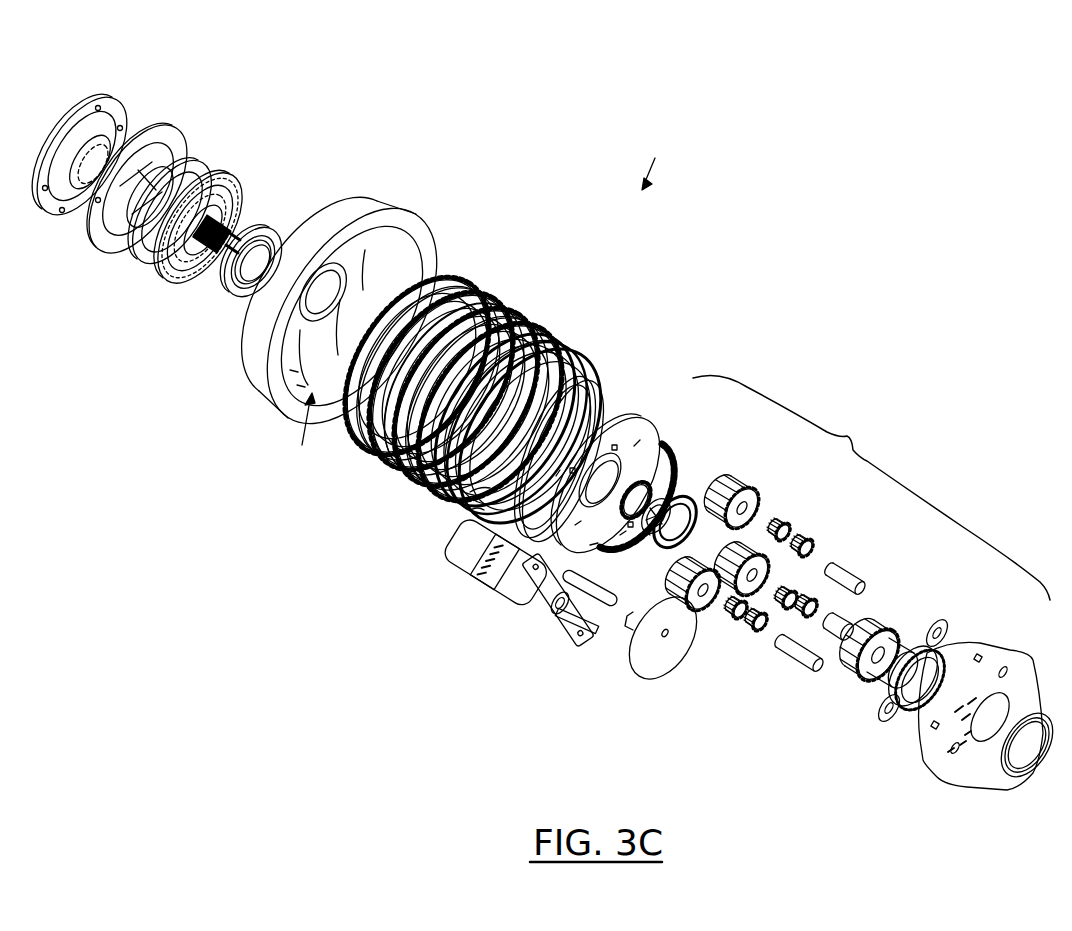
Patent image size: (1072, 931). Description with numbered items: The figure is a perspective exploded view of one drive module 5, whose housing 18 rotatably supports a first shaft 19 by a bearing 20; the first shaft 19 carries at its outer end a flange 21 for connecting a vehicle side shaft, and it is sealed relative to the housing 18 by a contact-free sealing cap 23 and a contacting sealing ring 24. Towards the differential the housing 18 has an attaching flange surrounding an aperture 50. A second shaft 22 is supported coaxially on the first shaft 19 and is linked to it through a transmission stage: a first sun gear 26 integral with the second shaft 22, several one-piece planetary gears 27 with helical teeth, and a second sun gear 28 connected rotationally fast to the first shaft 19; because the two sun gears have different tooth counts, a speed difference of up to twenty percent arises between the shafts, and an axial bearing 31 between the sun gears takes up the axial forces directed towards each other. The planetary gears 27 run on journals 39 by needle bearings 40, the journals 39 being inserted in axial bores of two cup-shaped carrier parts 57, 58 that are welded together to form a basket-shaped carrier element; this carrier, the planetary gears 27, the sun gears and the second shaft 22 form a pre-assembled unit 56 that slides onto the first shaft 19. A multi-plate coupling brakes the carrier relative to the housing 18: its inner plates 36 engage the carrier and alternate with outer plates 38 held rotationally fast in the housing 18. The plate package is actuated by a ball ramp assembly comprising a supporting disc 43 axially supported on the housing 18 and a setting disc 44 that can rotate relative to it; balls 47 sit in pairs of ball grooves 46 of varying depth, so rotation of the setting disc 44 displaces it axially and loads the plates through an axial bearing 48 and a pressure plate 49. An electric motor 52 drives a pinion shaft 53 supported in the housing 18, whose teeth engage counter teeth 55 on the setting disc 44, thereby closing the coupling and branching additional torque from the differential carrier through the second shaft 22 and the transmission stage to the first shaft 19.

The drive module 5 is at (656, 153).
The housing 18 is at (357, 210).
The first shaft 19 is at (135, 165).
The bearing 20 is at (270, 227).
The flange 21 is at (116, 100).
The second shaft 22 is at (905, 645).
The sealing cap 23 is at (193, 160).
The sealing ring 24 is at (227, 177).
The first sun gear 26 is at (880, 620).
The planetary gears 27 is at (750, 497).
The second sun gear 28 is at (663, 482).
The axial bearing 31 is at (687, 503).
The inner plates 36 is at (463, 300).
The outer plates 38 is at (443, 273).
The journals 39 is at (837, 567).
The needle roller 40 is at (780, 527).
The supporting disc 43 is at (629, 456).
The setting disc 44 is at (563, 360).
The ball grooves 46 is at (600, 367).
The balls 47 is at (473, 507).
The axial bearing 48 is at (547, 357).
The pressure plate 49 is at (530, 337).
The aperture 50 is at (301, 440).
The electric motor 52 is at (467, 570).
The pinion shaft 53 is at (643, 657).
The counter teeth 55 is at (487, 490).
The pre-assembled unit 56 is at (871, 487).
The cup-shaped carrier part 57 is at (628, 430).
The cup-shaped carrier part 58 is at (990, 650).